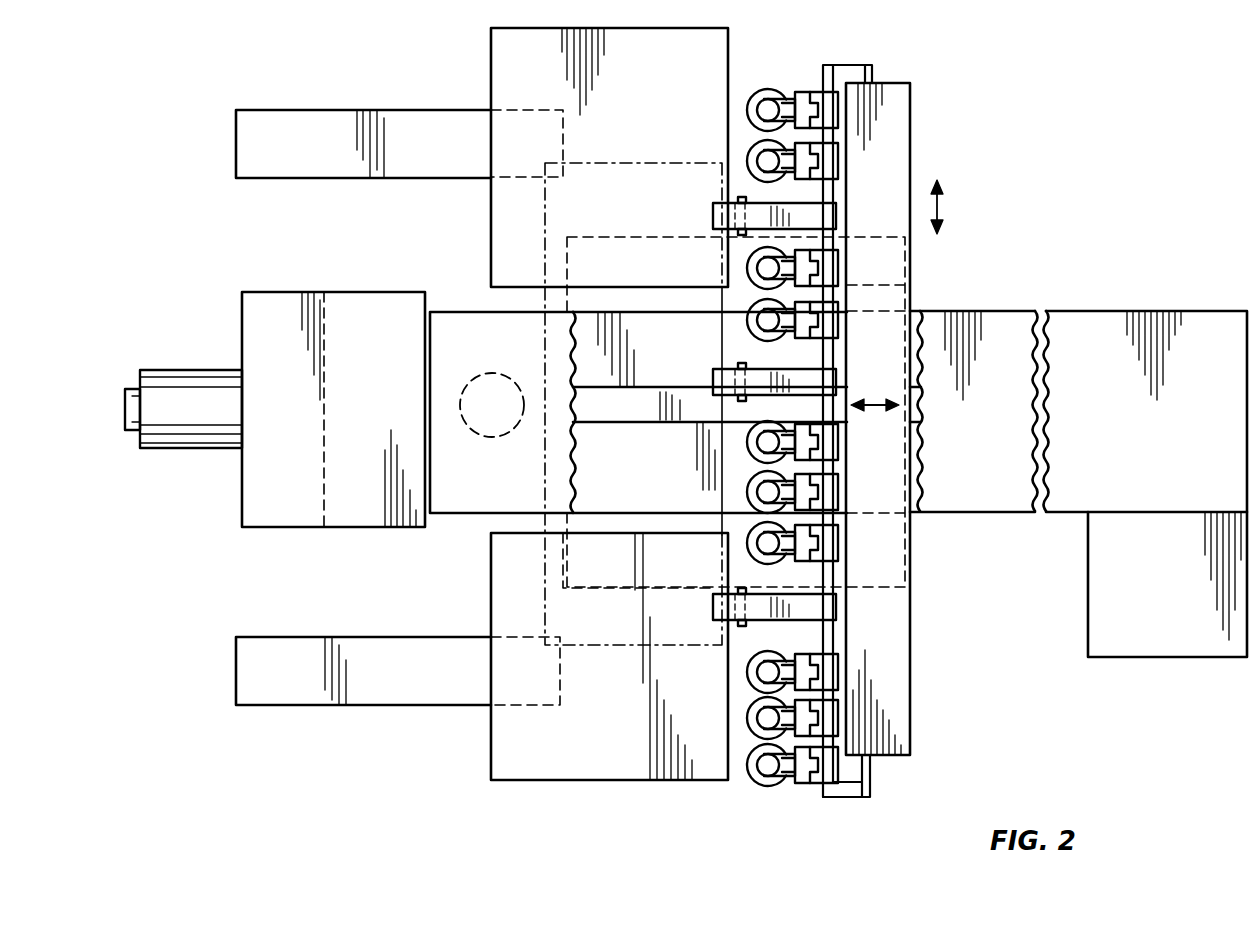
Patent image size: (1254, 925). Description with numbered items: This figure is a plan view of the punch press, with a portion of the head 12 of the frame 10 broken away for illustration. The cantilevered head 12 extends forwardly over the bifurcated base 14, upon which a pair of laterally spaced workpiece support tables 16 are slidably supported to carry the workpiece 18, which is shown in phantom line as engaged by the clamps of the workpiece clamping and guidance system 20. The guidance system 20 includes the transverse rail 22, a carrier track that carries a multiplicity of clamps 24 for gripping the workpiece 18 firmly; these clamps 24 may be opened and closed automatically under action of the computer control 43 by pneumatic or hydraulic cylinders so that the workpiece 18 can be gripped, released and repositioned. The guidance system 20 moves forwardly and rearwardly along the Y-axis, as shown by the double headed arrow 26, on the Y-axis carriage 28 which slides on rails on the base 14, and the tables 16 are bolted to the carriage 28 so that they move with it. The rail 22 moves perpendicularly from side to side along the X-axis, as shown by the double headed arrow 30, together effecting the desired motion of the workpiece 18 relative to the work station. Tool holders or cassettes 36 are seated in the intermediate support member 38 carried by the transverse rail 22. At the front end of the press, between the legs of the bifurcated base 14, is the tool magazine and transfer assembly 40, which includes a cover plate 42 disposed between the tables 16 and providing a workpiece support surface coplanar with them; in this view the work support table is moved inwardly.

The frame 10 is at (1178, 300).
The head 12 is at (1003, 323).
The bifurcated base 14 is at (660, 486).
The workpiece support tables 16 is at (655, 117).
The workpiece 18 is at (700, 163).
The workpiece clamping and guidance system 20 is at (912, 268).
The transverse rail 22 is at (886, 697).
The clamps 24 is at (762, 375).
The double headed arrow 26 is at (877, 402).
The Y-axis carriage 28 is at (870, 530).
The double headed arrow 30 is at (944, 208).
The tool holders 36 is at (828, 165).
The intermediate support member 38 is at (870, 785).
The tool magazine and transfer assembly 40 is at (178, 362).
The cover plate 42 is at (284, 302).
The computer control 43 is at (1105, 596).